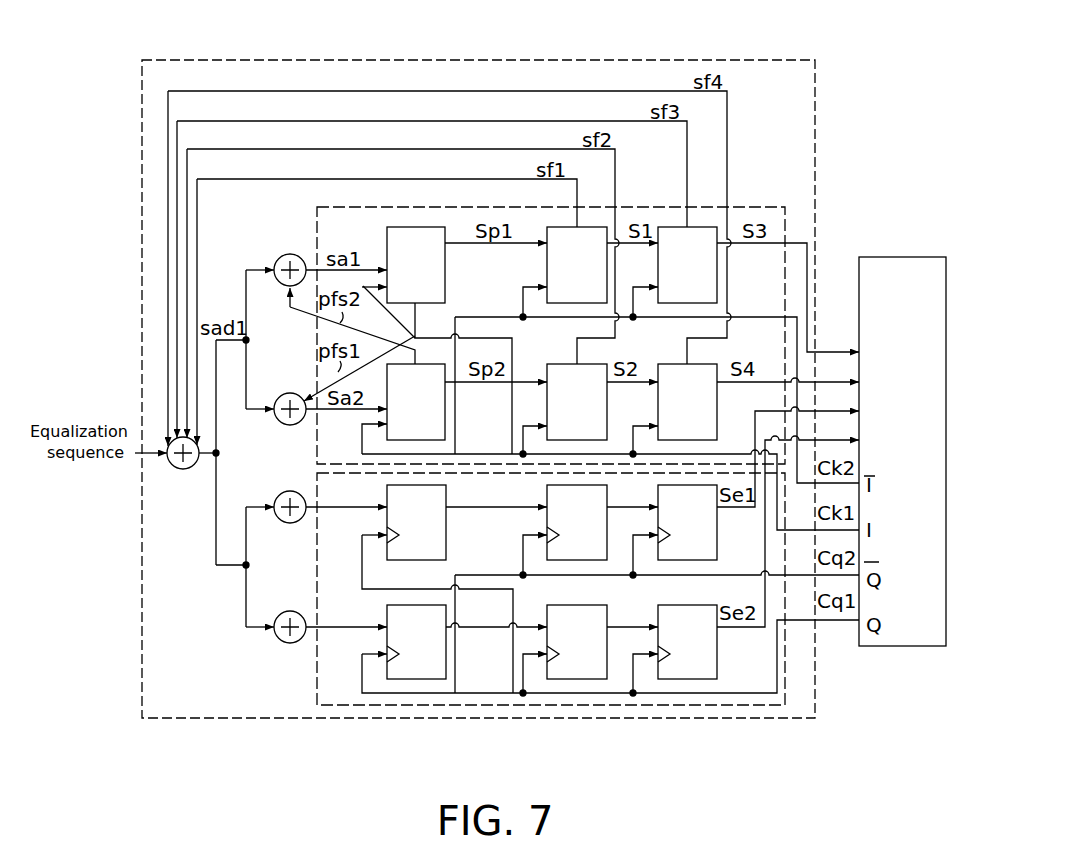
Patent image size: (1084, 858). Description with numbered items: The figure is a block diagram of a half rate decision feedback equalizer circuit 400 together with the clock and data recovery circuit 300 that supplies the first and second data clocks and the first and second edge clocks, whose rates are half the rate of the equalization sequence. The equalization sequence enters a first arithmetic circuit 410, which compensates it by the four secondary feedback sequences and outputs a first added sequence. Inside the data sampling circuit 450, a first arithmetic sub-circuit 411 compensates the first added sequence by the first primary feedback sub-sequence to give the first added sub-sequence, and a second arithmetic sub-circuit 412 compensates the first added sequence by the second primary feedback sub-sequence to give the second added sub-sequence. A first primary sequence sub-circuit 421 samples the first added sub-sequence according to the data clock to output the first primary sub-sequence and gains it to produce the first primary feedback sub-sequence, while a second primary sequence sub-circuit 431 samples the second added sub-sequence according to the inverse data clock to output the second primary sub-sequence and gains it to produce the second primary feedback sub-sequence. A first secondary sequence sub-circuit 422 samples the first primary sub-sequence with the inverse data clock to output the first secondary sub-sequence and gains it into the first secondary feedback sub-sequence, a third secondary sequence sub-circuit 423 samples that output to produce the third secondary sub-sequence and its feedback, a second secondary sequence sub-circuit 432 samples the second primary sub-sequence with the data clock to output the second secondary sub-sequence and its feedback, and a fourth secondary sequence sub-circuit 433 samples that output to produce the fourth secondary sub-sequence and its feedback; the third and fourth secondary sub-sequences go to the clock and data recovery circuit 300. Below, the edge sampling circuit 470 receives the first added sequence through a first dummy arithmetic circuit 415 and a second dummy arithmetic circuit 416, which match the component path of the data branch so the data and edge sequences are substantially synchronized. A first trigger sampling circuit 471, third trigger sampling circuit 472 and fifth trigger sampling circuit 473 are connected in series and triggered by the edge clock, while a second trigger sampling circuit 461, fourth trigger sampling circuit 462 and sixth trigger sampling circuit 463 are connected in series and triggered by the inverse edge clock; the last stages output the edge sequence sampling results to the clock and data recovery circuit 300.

The decision feedback equalizer circuit 400 is at (772, 60).
The clock and data recovery circuit 300 is at (890, 254).
The first arithmetic circuit 410 is at (183, 469).
The first arithmetic sub-circuit 411 is at (290, 254).
The second arithmetic sub-circuit 412 is at (290, 393).
The first dummy arithmetic circuit 415 is at (290, 491).
The second dummy arithmetic circuit 416 is at (290, 611).
The first primary sequence sub-circuit 421 is at (400, 253).
The first secondary sequence sub-circuit 422 is at (561, 253).
The third secondary sequence sub-circuit 423 is at (672, 253).
The second primary sequence sub-circuit 431 is at (400, 390).
The second secondary sequence sub-circuit 432 is at (561, 390).
The fourth secondary sequence sub-circuit 433 is at (672, 390).
The data sampling circuit 450 is at (317, 434).
The edge sampling circuit 470 is at (317, 684).
The second trigger sampling circuit 461 is at (415, 680).
The fourth trigger sampling circuit 462 is at (577, 680).
The sixth trigger sampling circuit 463 is at (690, 680).
The first trigger sampling circuit 471 is at (400, 511).
The third trigger sampling circuit 472 is at (561, 511).
The fifth trigger sampling circuit 473 is at (672, 511).